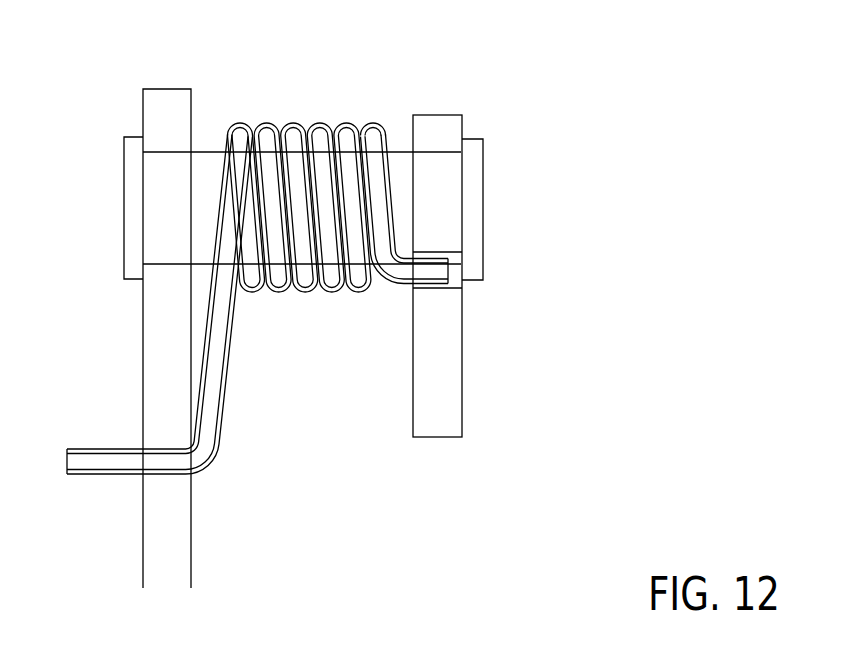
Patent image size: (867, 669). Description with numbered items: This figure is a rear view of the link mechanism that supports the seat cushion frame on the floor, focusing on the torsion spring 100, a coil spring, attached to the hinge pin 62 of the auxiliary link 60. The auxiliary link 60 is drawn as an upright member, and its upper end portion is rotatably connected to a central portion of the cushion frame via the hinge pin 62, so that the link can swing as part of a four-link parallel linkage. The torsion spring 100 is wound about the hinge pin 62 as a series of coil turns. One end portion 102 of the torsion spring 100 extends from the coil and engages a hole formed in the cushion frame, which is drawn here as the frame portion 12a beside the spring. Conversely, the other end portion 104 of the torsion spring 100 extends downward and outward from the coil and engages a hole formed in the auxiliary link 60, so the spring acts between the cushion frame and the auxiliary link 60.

The auxiliary link 60 is at (158, 364).
The hinge pin 62 is at (205, 163).
The torsion spring 100 is at (318, 122).
The one end portion 102 is at (431, 273).
The other end portion 104 is at (97, 464).
The second post 12a is at (443, 369).